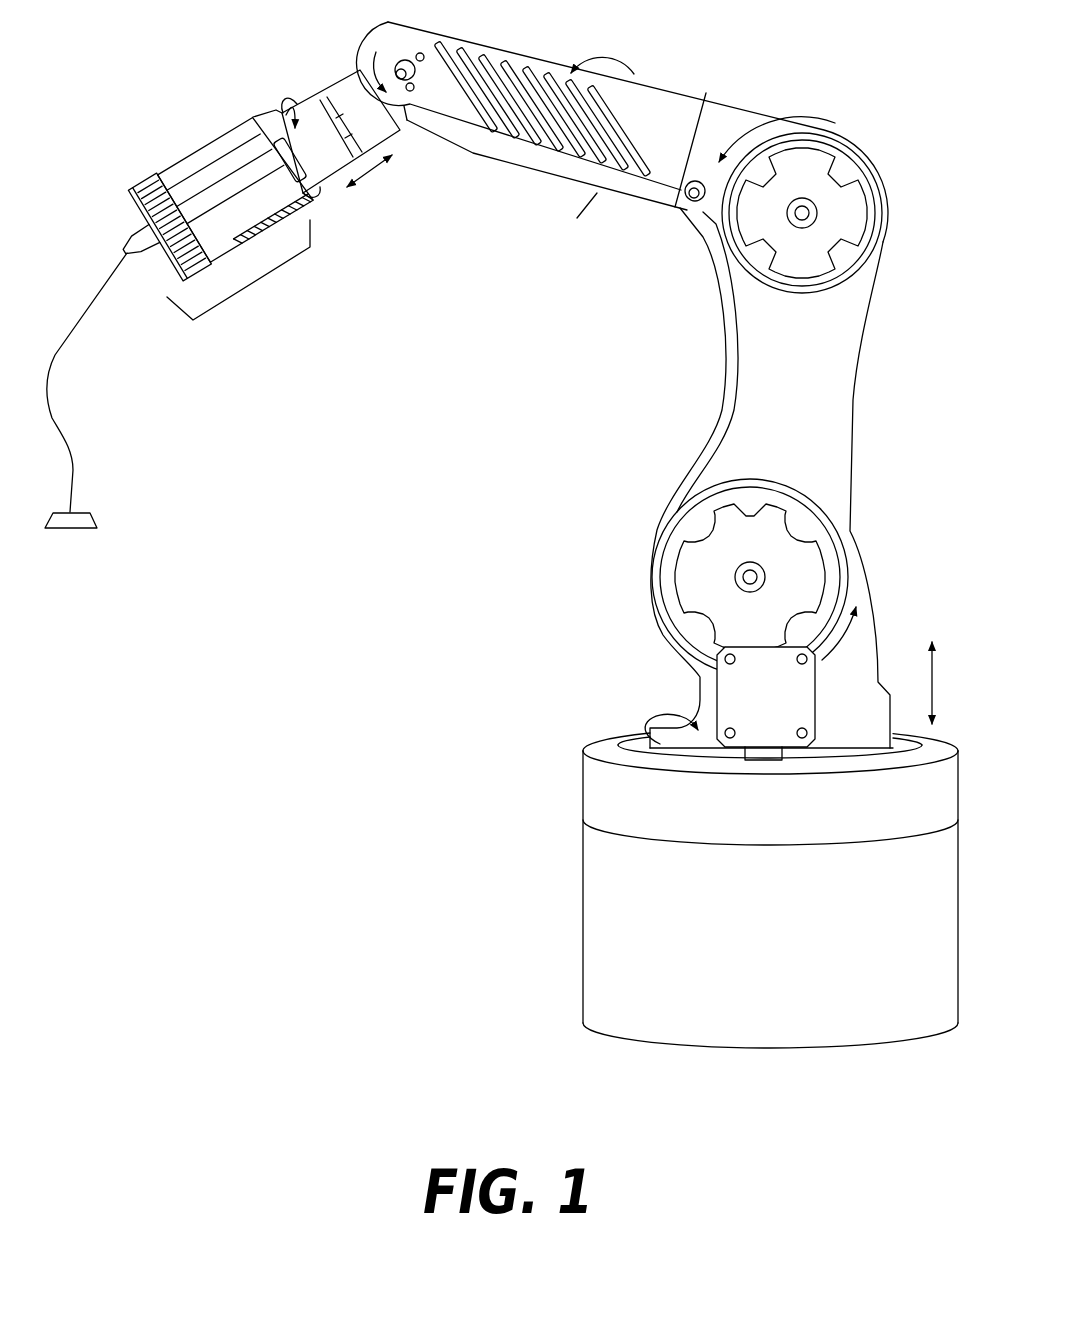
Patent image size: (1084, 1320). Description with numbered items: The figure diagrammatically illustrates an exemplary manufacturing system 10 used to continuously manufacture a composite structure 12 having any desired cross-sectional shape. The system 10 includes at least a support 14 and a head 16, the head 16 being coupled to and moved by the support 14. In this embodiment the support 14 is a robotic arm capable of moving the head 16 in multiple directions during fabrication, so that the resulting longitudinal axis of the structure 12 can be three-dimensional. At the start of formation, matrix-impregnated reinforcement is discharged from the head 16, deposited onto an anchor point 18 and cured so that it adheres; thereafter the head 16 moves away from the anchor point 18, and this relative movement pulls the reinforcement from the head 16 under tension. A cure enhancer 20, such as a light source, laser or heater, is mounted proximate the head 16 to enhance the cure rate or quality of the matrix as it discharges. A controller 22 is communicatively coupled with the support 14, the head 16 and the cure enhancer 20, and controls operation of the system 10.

The system 10 is at (399, 775).
The composite structure 12 is at (75, 478).
The support 14 is at (775, 440).
The head 16 is at (253, 286).
The anchor point 18 is at (64, 528).
The cure enhancer 20 is at (168, 270).
The controller 22 is at (757, 707).